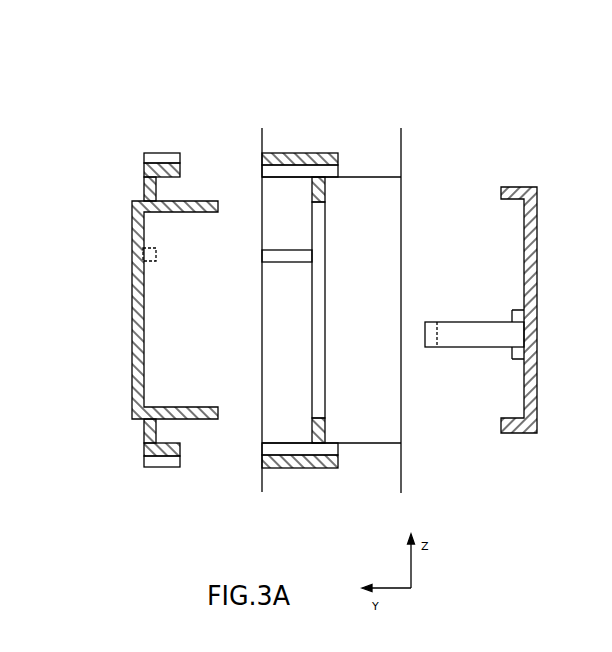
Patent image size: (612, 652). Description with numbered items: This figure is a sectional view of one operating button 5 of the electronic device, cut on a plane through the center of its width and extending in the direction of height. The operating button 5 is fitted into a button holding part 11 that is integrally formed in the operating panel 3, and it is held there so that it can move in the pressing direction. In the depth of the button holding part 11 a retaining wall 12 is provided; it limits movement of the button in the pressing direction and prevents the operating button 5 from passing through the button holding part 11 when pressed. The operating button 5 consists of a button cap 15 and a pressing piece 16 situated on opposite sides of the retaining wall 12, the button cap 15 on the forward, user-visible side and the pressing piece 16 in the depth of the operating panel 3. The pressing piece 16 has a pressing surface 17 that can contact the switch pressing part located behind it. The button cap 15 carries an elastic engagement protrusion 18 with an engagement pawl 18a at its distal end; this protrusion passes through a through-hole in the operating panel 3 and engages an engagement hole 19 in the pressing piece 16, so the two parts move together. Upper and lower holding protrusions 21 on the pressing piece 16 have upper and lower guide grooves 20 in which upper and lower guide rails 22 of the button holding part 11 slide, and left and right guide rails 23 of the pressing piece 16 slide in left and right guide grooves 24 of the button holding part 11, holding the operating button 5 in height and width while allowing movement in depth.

The operating button 5 is at (392, 52).
The pressing piece 16 is at (222, 95).
The button cap 15 is at (506, 166).
The operating panel 3 is at (363, 149).
The button holding part 11 is at (279, 420).
The retaining wall 12 is at (325, 427).
The upper and lower guide rails 22 is at (313, 151).
The left and right guide grooves 24 is at (280, 249).
The pressing surface 17 is at (132, 283).
The engagement hole 19 is at (132, 342).
The upper and lower guide grooves 20 is at (155, 163).
The upper and lower holding protrusions 21 is at (145, 173).
The left and right guide rails 23 is at (153, 247).
The engagement protrusion 18 is at (455, 349).
The engagement pawl 18a is at (428, 322).